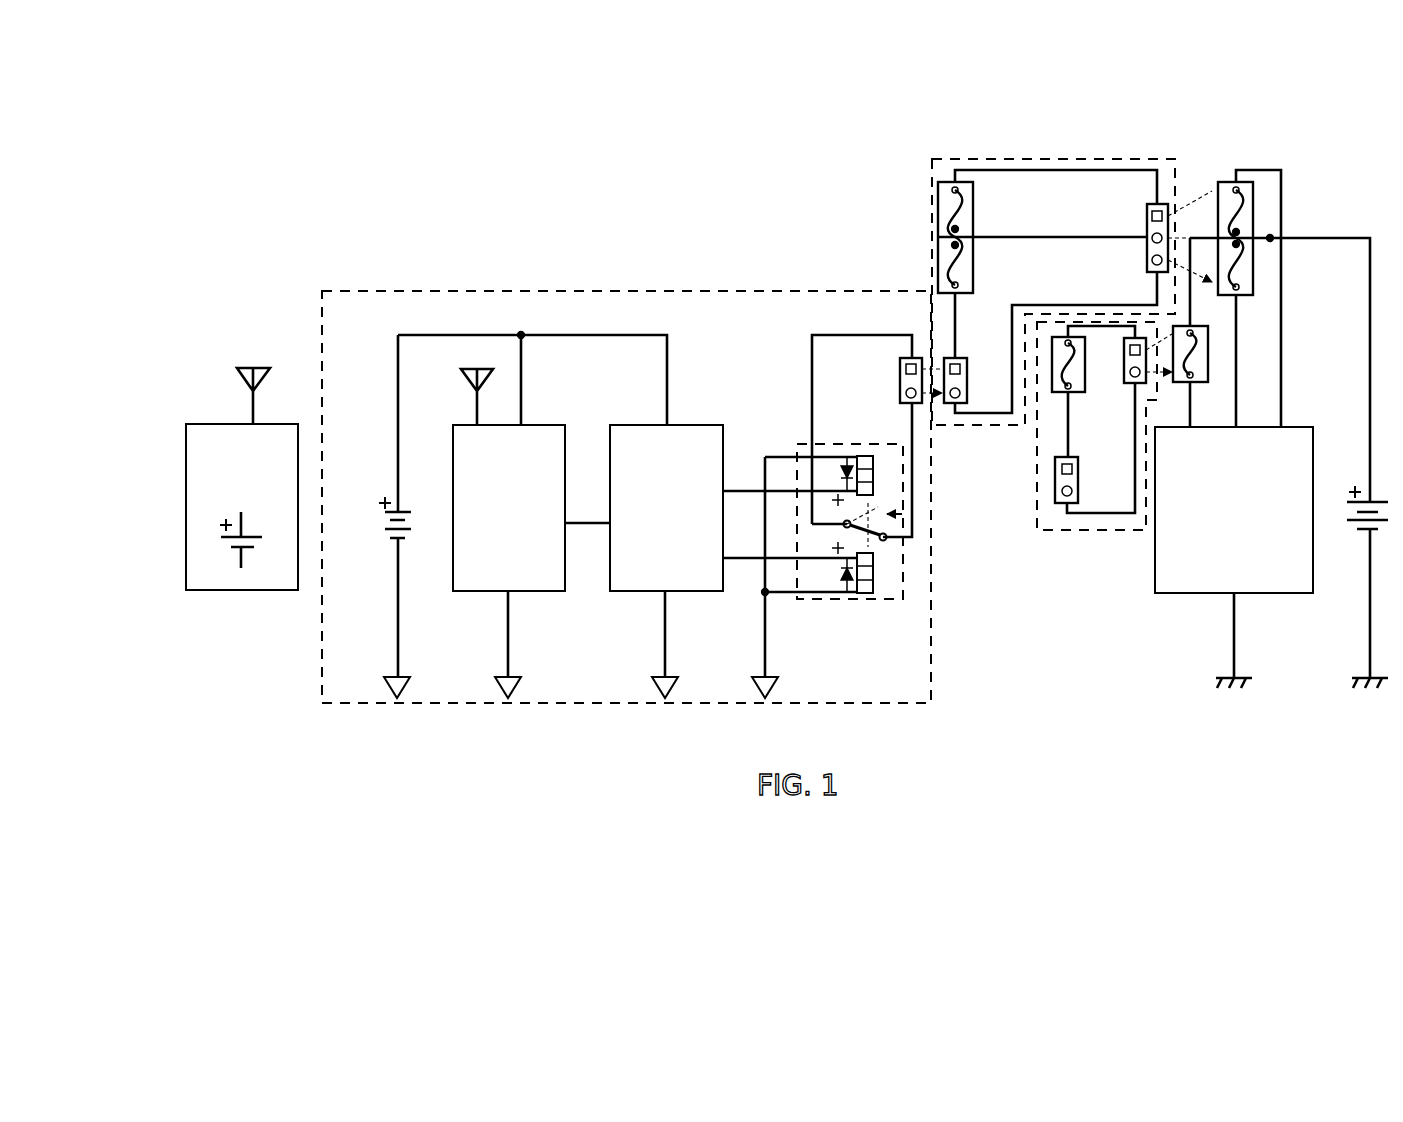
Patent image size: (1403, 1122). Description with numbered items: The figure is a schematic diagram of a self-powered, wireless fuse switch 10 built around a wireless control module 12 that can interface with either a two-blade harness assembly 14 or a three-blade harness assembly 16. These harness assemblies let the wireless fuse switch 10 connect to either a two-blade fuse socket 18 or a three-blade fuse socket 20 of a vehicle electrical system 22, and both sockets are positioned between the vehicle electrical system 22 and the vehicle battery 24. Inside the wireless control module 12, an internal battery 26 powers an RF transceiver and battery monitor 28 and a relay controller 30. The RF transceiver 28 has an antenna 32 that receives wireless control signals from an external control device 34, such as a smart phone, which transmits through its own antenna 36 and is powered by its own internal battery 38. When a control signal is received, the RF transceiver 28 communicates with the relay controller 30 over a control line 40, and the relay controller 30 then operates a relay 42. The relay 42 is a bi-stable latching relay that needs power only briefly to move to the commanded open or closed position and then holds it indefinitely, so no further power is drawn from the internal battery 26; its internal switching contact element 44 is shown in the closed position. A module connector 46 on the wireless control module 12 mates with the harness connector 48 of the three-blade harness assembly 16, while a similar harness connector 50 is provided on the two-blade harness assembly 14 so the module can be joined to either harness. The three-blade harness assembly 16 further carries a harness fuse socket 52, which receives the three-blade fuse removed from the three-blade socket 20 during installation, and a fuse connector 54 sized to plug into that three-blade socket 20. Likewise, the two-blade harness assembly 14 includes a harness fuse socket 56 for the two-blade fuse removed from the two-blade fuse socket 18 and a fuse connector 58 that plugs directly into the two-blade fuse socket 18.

The wireless fuse switch 10 is at (895, 230).
The wireless control module 12 is at (468, 706).
The two-blade harness assembly 14 is at (1043, 533).
The three-blade harness assembly 16 is at (992, 159).
The two-blade fuse socket 18 is at (1208, 358).
The three-blade fuse socket 20 is at (1253, 193).
The vehicle electrical system 22 is at (1172, 596).
The vehicle battery 24 is at (1378, 500).
The internal battery 26 is at (378, 533).
The RF transceiver and battery monitor 28 is at (541, 424).
The relay controller 30 is at (692, 424).
The antenna 32 is at (474, 402).
The control device 34 is at (197, 591).
The antenna 36 is at (252, 408).
The internal battery 38 is at (254, 535).
The control line 40 is at (577, 524).
The relay 42 is at (830, 602).
The internal switching contact element 44 is at (855, 527).
The module connector 46 is at (900, 388).
The harness connector 48 is at (958, 357).
The harness connector 50 is at (1072, 455).
The harness fuse socket 52 is at (973, 205).
The fuse connector 54 is at (1147, 232).
The harness fuse socket 56 is at (1056, 395).
The fuse connector 58 is at (1118, 345).